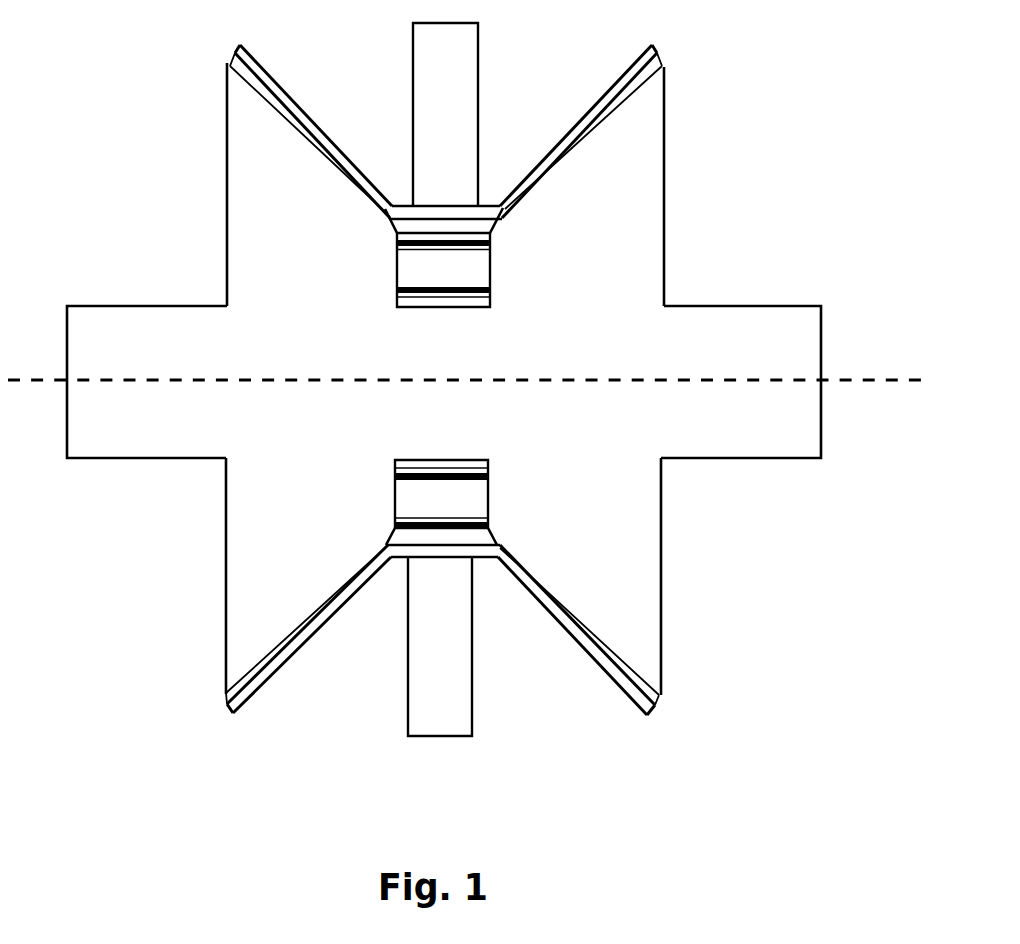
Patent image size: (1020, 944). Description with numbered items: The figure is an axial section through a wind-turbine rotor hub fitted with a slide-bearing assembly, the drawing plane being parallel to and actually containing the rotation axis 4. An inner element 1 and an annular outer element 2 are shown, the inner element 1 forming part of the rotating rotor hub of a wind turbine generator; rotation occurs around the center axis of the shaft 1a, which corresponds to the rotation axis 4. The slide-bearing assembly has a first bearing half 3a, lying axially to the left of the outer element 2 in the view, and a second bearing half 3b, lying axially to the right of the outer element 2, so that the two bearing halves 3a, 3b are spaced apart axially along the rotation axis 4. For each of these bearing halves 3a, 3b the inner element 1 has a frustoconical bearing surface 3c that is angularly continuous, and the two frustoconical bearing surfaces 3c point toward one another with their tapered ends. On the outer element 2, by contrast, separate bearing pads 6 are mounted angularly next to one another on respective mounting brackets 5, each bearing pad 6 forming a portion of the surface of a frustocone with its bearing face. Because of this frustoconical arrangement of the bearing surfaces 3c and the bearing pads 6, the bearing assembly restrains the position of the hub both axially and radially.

The inner element 1 is at (318, 295).
The shaft 1a is at (162, 304).
The outer element 2 is at (456, 178).
The first bearing half 3a is at (288, 705).
The second bearing half 3b is at (572, 705).
The frustoconical bearing surface 3c is at (401, 127).
The rotation axis 4 is at (856, 372).
The mounting bracket 5 is at (292, 90).
The bearing pad 6 is at (245, 77).